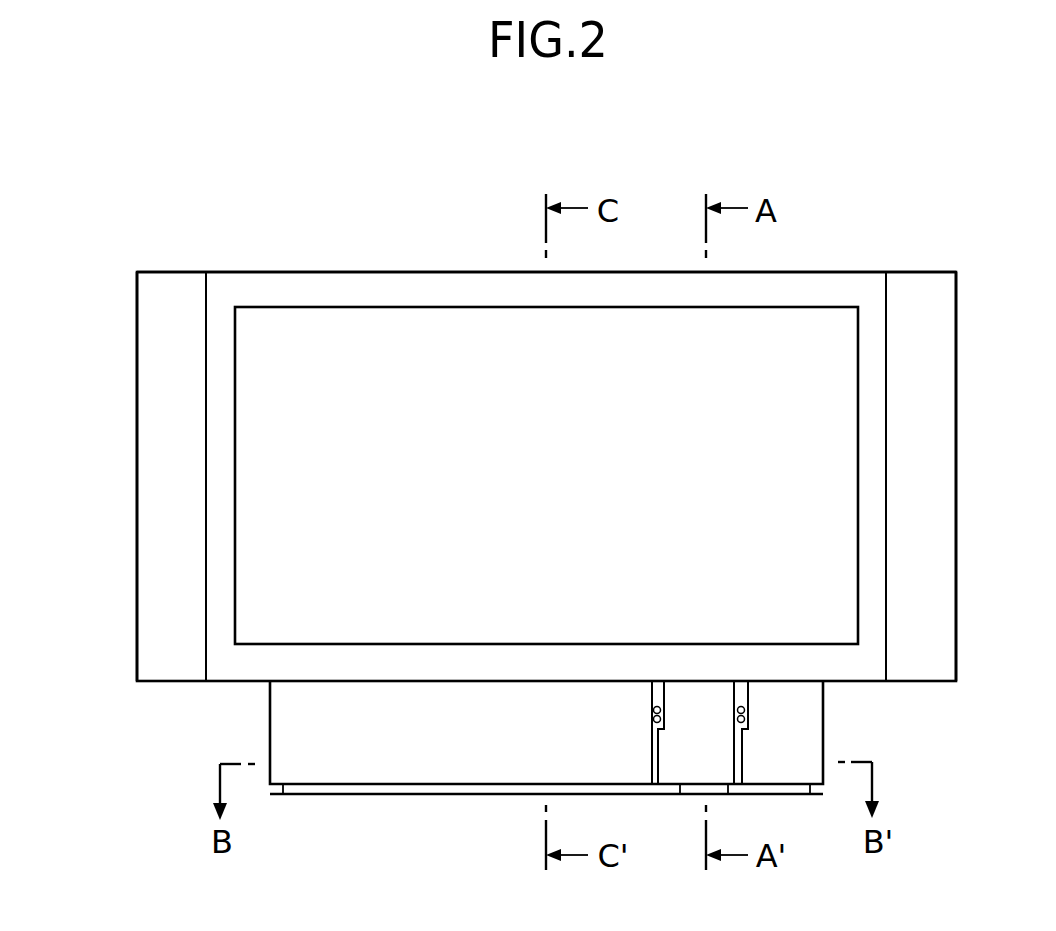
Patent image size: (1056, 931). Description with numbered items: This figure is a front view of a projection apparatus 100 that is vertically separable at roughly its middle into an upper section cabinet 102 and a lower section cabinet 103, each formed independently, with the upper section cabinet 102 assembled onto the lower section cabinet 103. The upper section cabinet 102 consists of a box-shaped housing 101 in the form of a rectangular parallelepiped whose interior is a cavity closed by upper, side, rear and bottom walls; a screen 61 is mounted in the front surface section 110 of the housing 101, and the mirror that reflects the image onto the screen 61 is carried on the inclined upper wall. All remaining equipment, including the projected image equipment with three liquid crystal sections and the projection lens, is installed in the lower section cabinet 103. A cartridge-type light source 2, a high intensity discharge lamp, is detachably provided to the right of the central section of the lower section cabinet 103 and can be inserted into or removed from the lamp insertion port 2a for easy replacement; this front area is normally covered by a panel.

The projection apparatus 100 is at (426, 190).
The housing 101 is at (292, 270).
The front surface section 110 is at (220, 427).
The upper section cabinet 102 is at (957, 470).
The screen 61 is at (838, 388).
The lower section cabinet 103 is at (824, 718).
The light source 2 is at (680, 782).
The lamp insertion port 2a is at (729, 796).